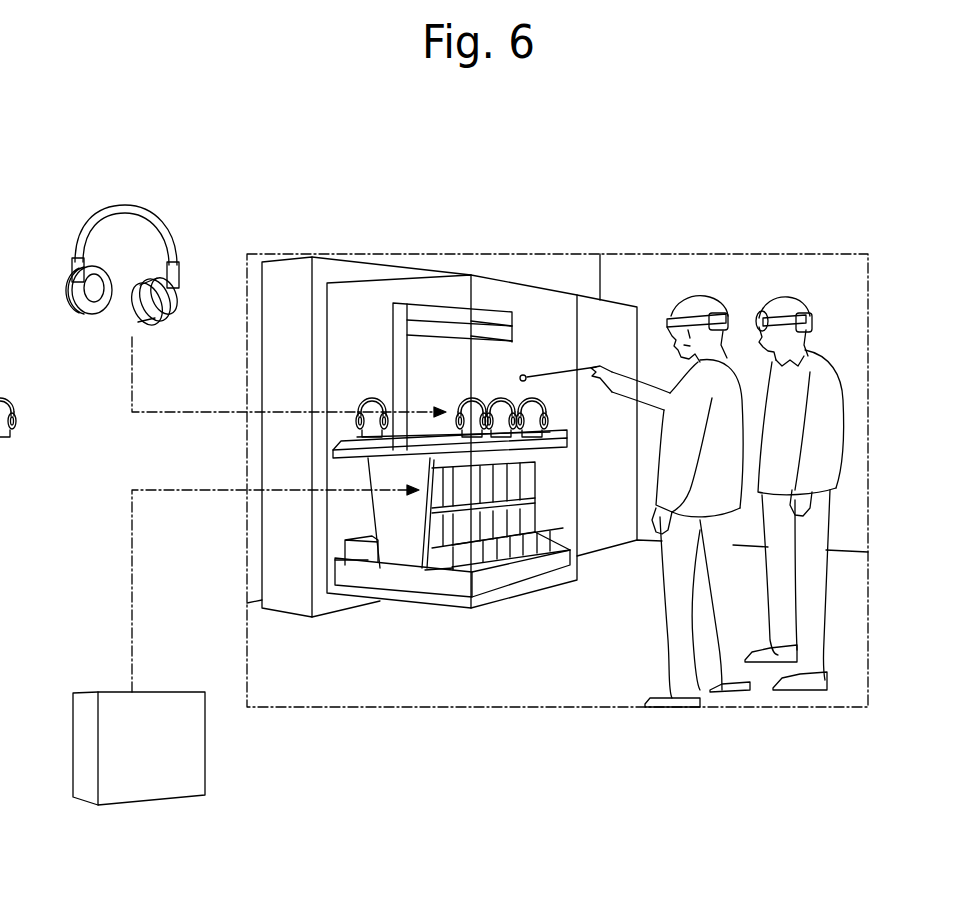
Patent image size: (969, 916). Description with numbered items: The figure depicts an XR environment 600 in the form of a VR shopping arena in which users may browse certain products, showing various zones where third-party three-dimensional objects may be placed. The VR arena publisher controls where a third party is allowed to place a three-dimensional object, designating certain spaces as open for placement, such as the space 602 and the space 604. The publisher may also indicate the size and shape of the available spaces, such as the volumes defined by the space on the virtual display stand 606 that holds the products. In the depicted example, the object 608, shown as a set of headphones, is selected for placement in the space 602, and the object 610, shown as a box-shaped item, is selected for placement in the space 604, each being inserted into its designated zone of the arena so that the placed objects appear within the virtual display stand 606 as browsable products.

The virtual store system 600 is at (793, 213).
The space 602 is at (436, 369).
The space 604 is at (487, 564).
The virtual display stand 606 is at (492, 313).
The object 608 is at (162, 223).
The object 610 is at (143, 777).